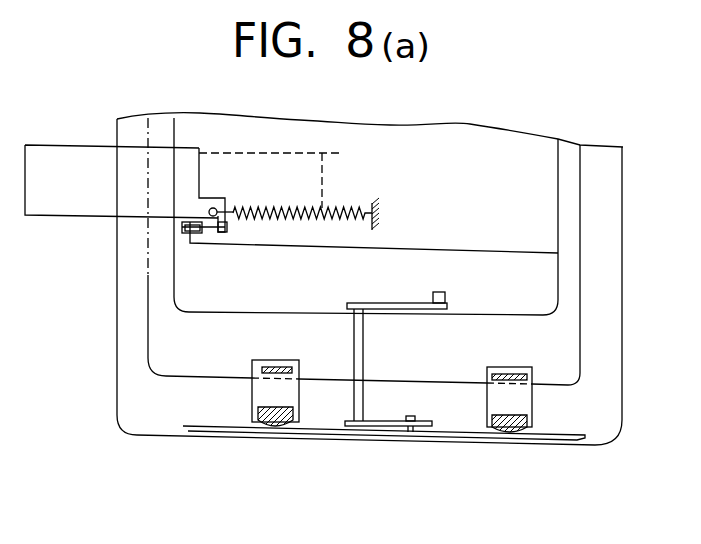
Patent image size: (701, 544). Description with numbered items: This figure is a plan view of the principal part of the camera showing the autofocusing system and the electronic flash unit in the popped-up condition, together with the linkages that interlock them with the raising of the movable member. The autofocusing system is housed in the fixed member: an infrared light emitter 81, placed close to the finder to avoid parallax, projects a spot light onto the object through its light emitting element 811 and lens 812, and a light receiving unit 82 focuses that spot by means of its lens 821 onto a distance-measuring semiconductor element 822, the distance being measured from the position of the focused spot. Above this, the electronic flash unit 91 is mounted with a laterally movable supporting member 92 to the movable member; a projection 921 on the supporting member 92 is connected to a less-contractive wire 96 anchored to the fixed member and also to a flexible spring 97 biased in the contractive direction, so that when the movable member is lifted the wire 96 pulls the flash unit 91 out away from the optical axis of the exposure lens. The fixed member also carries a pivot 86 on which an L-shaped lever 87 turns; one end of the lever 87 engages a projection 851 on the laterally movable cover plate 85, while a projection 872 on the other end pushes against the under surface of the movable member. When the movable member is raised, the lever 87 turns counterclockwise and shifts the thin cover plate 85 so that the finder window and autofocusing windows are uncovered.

The electronic flash unit 91 is at (60, 203).
The supporting member 92 is at (213, 207).
The projection 921 is at (225, 232).
The wire 96 is at (366, 209).
The flexible spring 97 is at (265, 208).
The L-shaped lever 87 is at (425, 311).
The projection 872 is at (445, 298).
The pivot 86 is at (355, 404).
The projection 851 is at (410, 432).
The infrared light emitter 81 is at (278, 446).
The lens 812 is at (262, 370).
The light emitting element 811 is at (268, 435).
The light receiving unit 82 is at (508, 447).
The lens 821 is at (527, 377).
The distance-measuring semiconductor element 822 is at (518, 432).
The cover plate 85 is at (575, 442).